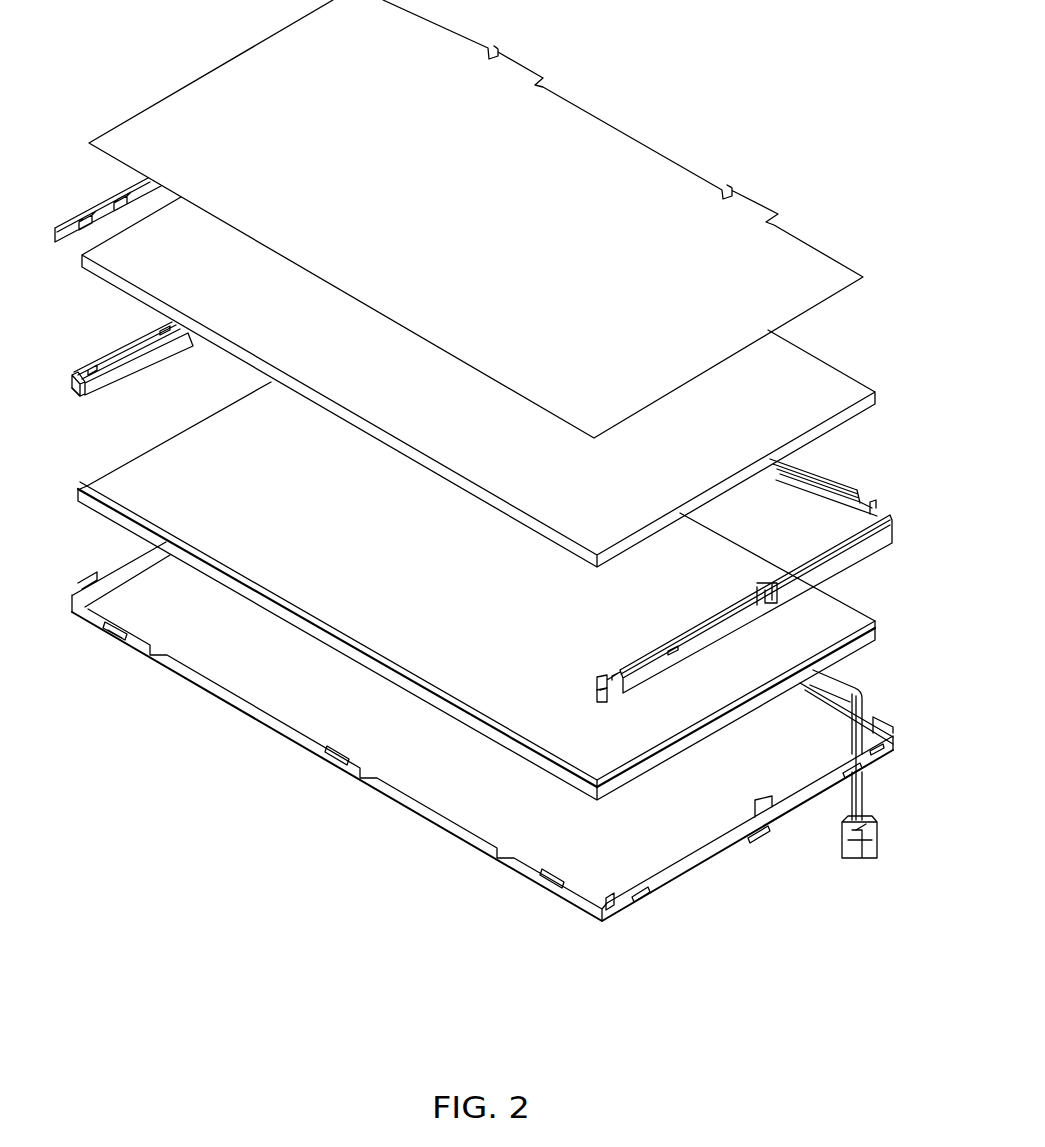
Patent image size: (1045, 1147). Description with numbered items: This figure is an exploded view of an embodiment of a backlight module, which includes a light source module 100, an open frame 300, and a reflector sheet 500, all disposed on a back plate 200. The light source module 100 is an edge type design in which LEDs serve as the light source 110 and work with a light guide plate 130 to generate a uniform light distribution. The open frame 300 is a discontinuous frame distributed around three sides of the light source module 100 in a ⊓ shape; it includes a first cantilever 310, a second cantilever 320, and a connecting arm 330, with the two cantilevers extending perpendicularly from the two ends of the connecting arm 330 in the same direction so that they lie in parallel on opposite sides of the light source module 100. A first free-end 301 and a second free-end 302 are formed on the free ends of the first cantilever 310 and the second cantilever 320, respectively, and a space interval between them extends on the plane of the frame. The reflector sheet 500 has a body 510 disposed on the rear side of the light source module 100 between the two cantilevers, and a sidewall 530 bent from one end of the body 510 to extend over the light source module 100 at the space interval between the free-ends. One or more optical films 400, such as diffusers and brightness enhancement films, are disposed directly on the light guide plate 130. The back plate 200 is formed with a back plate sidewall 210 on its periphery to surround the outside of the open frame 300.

The light source module 100 is at (99, 226).
The light source 110 is at (115, 196).
The light guide plate 130 is at (818, 378).
The back plate 200 is at (482, 747).
The back plate sidewall 210 is at (420, 807).
The open frame 300 is at (488, 648).
The first free-end 301 is at (597, 695).
The second free-end 302 is at (70, 388).
The first cantilever 310 is at (842, 553).
The second cantilever 320 is at (127, 347).
The connecting arm 330 is at (807, 475).
The optical film 400 is at (628, 183).
The reflector sheet 500 is at (476, 608).
The body 510 is at (298, 577).
The sidewall 530 is at (328, 630).